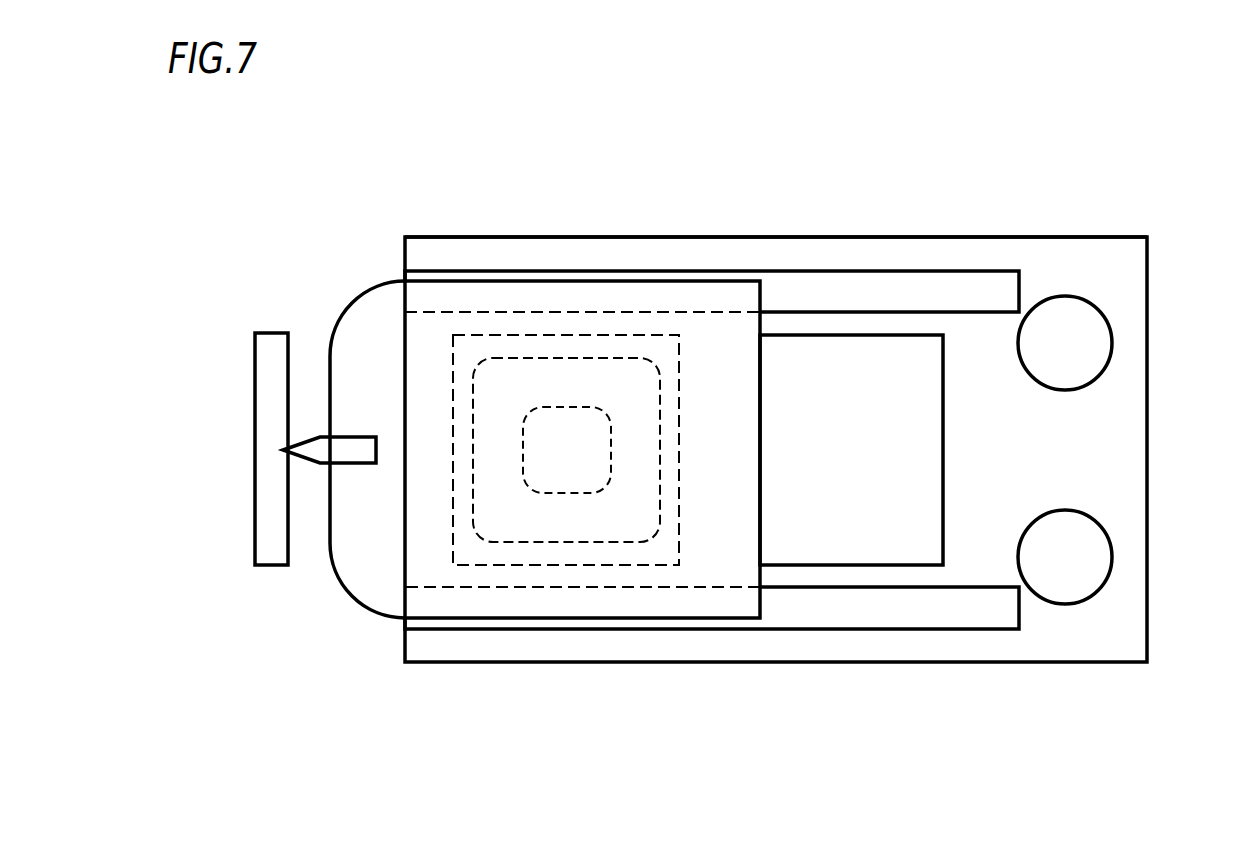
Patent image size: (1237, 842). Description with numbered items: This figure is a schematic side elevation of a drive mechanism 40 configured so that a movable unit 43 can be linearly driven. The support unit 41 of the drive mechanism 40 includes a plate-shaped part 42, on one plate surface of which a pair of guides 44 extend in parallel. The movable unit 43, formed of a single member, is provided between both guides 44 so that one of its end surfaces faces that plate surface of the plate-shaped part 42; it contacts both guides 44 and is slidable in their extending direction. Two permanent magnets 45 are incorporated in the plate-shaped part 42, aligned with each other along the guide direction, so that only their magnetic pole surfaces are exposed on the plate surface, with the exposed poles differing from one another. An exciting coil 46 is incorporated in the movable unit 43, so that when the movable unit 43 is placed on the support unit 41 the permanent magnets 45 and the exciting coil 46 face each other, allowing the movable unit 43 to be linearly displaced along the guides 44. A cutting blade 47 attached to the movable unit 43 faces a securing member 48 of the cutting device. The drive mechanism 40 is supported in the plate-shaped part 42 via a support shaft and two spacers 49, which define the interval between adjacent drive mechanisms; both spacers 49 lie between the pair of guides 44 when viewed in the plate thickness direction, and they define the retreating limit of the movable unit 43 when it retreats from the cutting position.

The drive mechanism 40 is at (409, 163).
The support unit 41 is at (815, 228).
The plate-shaped part 42 is at (1107, 253).
The movable unit 43 is at (351, 279).
The guide 44 is at (985, 282).
The permanent magnet 45 is at (570, 340).
The exciting coil 46 is at (568, 540).
The cutting blade 47 is at (318, 435).
The securing member 48 is at (265, 400).
The spacer 49 is at (1093, 323).